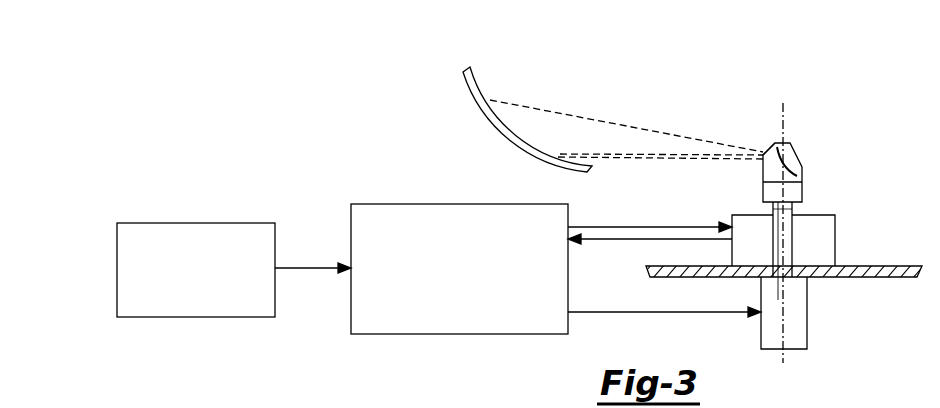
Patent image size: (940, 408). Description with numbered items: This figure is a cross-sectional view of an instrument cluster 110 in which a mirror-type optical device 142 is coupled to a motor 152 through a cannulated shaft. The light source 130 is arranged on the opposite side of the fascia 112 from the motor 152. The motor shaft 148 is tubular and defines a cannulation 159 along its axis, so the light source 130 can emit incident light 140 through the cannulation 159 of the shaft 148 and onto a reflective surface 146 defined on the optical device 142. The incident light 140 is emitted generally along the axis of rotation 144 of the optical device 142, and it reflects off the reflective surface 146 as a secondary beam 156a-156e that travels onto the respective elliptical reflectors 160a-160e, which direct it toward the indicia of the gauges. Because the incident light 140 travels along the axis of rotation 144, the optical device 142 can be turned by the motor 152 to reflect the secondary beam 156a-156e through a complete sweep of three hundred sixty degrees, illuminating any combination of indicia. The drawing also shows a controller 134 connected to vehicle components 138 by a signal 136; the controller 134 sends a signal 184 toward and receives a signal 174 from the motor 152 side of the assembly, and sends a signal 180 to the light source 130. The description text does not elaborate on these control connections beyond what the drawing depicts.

The cluster 110 is at (741, 54).
The fascia 112 is at (901, 278).
The light source 130 is at (802, 337).
The controller 134 is at (397, 204).
The vehicle component signal 136 is at (311, 268).
The vehicle components 138 is at (176, 223).
The incident light 140 is at (784, 243).
The optical device 142 is at (792, 152).
The axis of rotation 144 is at (785, 116).
The reflective surface 146 is at (762, 147).
The motor shaft 148 is at (806, 212).
The motor 152 is at (830, 233).
The secondary beam 156a-156e is at (568, 132).
The cannulation 159 is at (786, 230).
The elliptical reflectors 160a-160e is at (478, 84).
The sensor feedback signal 174 is at (604, 240).
The motor control signal 180 is at (662, 313).
The sensor control signal 184 is at (630, 227).